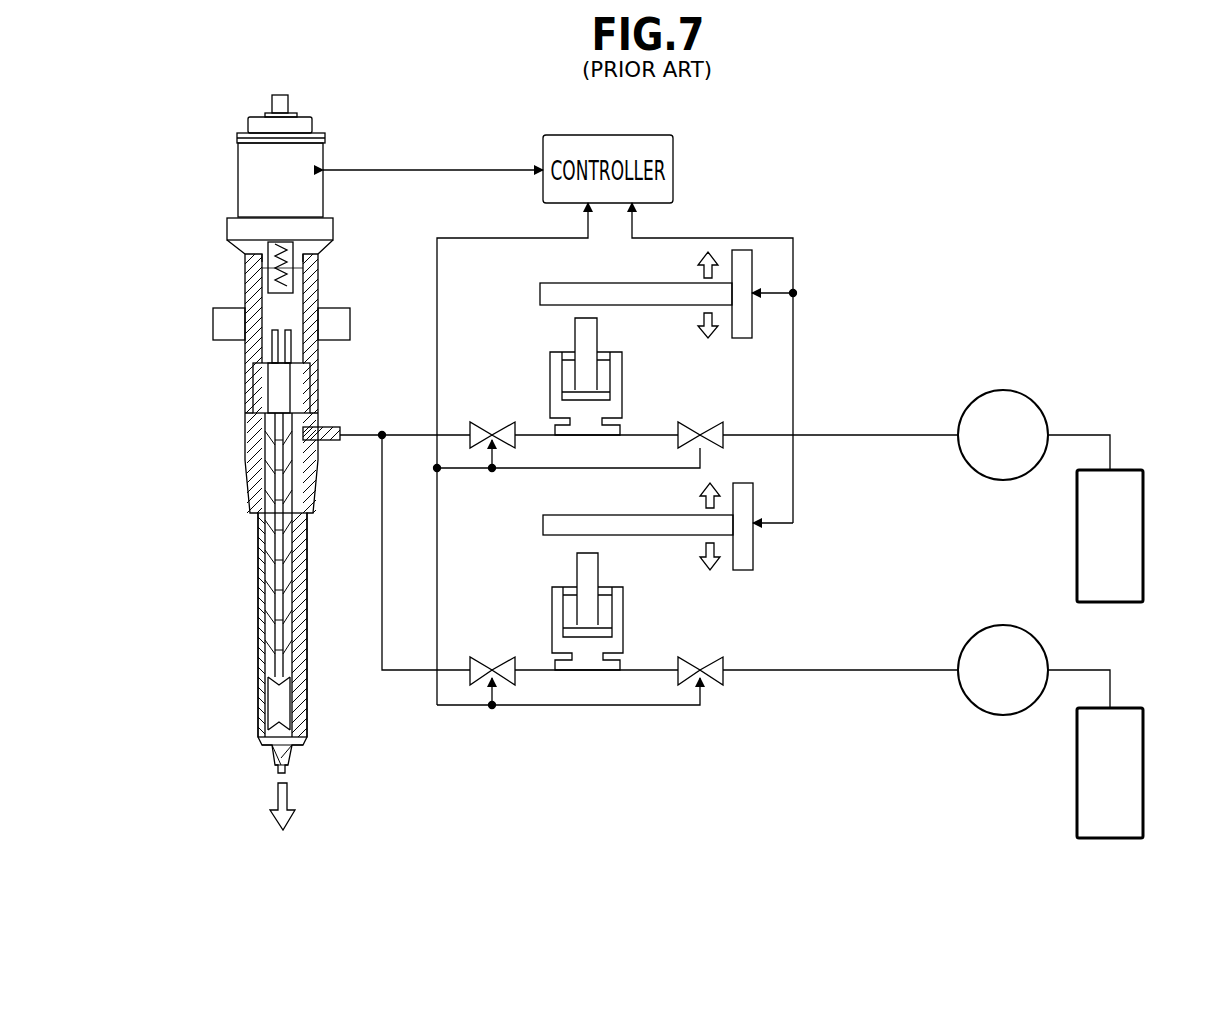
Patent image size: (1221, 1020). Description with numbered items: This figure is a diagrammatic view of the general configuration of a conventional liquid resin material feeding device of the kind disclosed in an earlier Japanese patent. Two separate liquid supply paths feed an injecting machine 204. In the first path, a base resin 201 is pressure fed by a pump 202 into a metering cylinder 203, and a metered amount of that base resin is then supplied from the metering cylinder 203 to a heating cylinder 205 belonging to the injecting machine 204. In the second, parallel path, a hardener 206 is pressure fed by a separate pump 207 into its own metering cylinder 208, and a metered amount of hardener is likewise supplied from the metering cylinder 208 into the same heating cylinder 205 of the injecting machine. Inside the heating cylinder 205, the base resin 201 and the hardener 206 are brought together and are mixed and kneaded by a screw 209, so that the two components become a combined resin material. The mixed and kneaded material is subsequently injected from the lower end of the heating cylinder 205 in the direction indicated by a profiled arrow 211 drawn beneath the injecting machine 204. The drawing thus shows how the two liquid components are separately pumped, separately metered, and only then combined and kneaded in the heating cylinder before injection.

The base resin 201 is at (1132, 515).
The pump 202 is at (1027, 410).
The metering cylinder 203 is at (618, 382).
The injecting machine 204 is at (235, 390).
The heating cylinder 205 is at (253, 547).
The hardener 206 is at (1133, 753).
The pump 207 is at (1037, 653).
The metering cylinder 208 is at (617, 622).
The screw 209 is at (283, 693).
The profiled arrow 211 is at (287, 797).